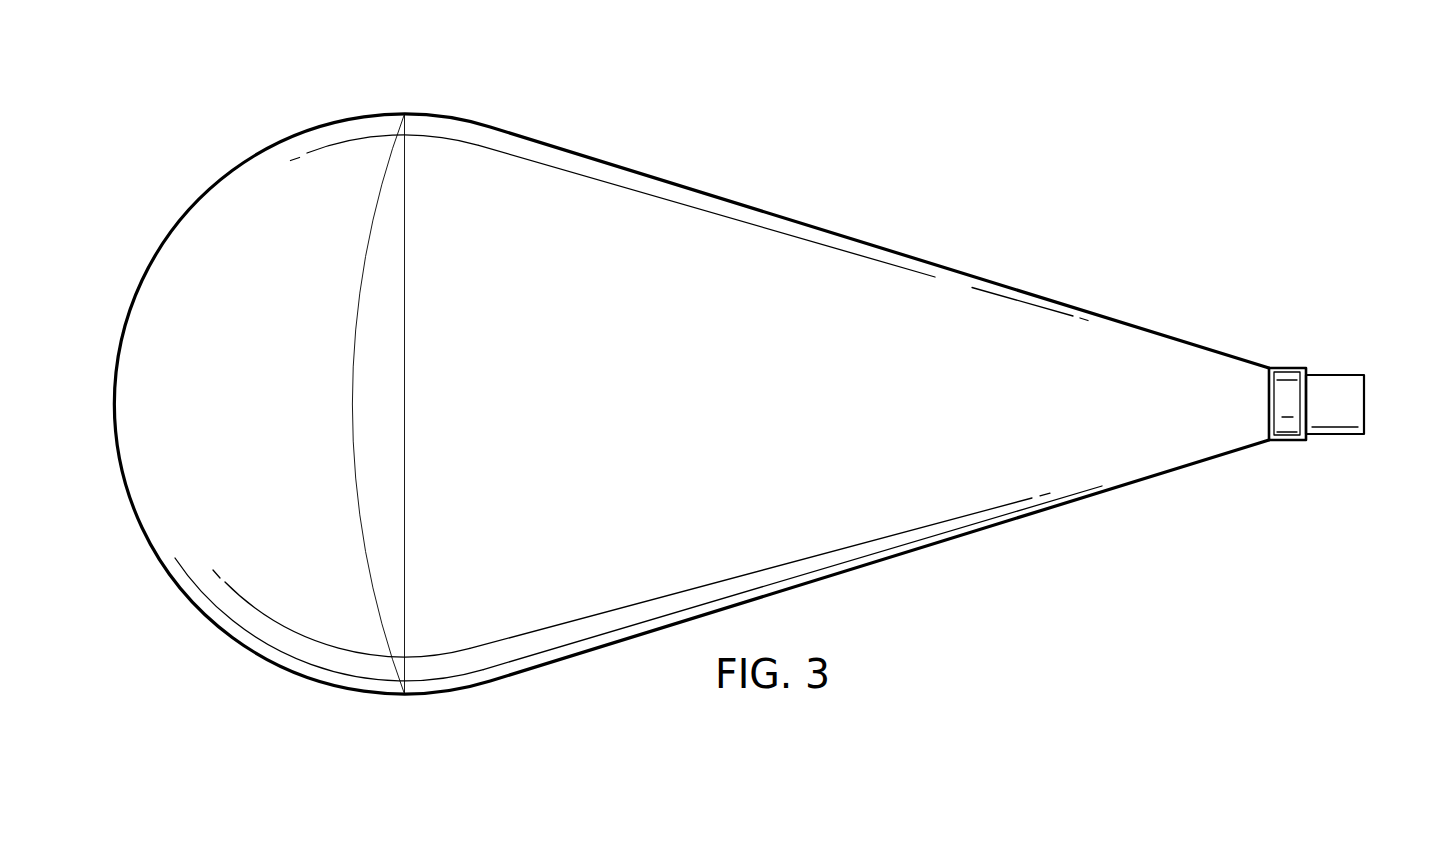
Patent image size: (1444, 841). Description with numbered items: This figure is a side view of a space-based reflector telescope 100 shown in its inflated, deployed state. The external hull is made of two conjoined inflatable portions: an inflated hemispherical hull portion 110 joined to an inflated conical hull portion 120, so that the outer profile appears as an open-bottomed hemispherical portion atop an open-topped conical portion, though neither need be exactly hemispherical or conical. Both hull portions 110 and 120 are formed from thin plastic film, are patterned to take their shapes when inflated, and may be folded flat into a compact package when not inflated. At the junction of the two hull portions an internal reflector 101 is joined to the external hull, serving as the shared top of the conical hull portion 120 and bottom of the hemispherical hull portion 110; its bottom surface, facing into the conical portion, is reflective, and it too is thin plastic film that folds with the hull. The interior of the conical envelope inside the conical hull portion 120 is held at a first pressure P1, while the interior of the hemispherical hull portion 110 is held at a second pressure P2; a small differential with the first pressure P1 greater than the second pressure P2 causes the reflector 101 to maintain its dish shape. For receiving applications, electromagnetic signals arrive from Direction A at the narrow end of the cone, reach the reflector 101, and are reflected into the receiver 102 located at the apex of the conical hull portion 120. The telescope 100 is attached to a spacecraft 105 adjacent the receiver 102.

The space-based reflector telescope 100 is at (905, 97).
The hemispherical hull portion 110 is at (160, 560).
The conical hull portion 120 is at (882, 246).
The reflector 101 is at (354, 404).
The receiver 102 is at (1287, 441).
The spacecraft 105 is at (1334, 372).
The first pressure P1 is at (948, 291).
The second pressure P2 is at (212, 217).
The Direction A is at (1443, 404).